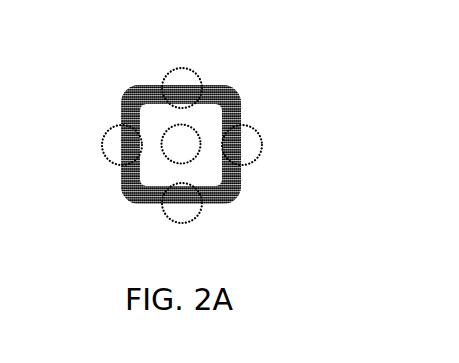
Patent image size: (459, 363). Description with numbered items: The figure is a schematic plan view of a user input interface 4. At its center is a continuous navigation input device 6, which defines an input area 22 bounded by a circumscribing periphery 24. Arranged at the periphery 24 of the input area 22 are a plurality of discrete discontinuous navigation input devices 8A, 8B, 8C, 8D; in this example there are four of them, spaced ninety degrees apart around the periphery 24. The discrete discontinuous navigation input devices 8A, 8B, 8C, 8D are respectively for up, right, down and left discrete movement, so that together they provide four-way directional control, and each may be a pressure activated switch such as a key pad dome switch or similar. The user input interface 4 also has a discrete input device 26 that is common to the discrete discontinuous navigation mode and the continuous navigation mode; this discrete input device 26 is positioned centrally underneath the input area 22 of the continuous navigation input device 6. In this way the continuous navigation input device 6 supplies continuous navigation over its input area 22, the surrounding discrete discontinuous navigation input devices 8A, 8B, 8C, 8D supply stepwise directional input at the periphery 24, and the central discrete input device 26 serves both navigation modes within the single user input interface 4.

The user input interface 4 is at (289, 76).
The continuous navigation input device 6 is at (213, 117).
The input area 22 is at (163, 118).
The periphery 24 is at (138, 178).
The discrete input device 26 is at (194, 157).
The discrete discontinuous navigation input device 8A is at (178, 69).
The discrete discontinuous navigation input device 8B is at (262, 145).
The discrete discontinuous navigation input device 8C is at (181, 223).
The discrete discontinuous navigation input device 8D is at (102, 146).